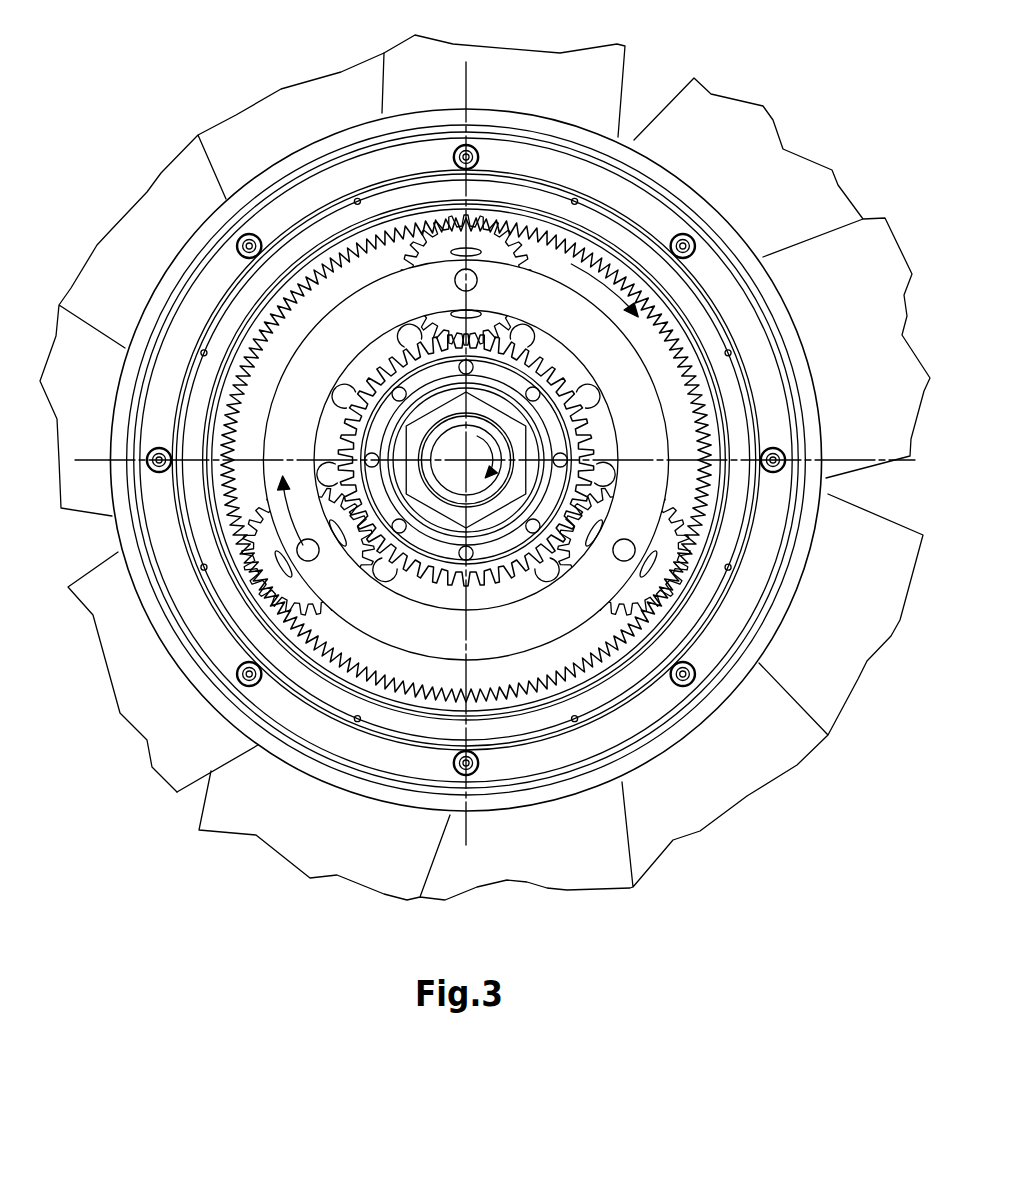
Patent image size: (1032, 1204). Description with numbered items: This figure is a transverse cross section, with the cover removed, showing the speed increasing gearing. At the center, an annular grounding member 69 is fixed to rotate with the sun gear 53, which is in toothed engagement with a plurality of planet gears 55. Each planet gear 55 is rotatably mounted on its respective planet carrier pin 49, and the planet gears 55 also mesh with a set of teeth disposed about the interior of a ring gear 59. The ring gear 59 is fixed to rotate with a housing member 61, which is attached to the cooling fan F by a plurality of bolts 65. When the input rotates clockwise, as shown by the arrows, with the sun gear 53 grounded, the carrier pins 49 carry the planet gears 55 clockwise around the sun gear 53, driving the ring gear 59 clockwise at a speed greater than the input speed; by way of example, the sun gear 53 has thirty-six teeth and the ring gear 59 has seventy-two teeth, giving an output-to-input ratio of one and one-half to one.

The cooling fan F is at (612, 72).
The planet carrier pins 49 is at (478, 280).
The sun gear 53 is at (533, 362).
The planet gears 55 is at (437, 247).
The ring gear 59 is at (277, 305).
The housing member 61 is at (715, 326).
The bolts 65 is at (483, 143).
The grounding member 69 is at (558, 437).